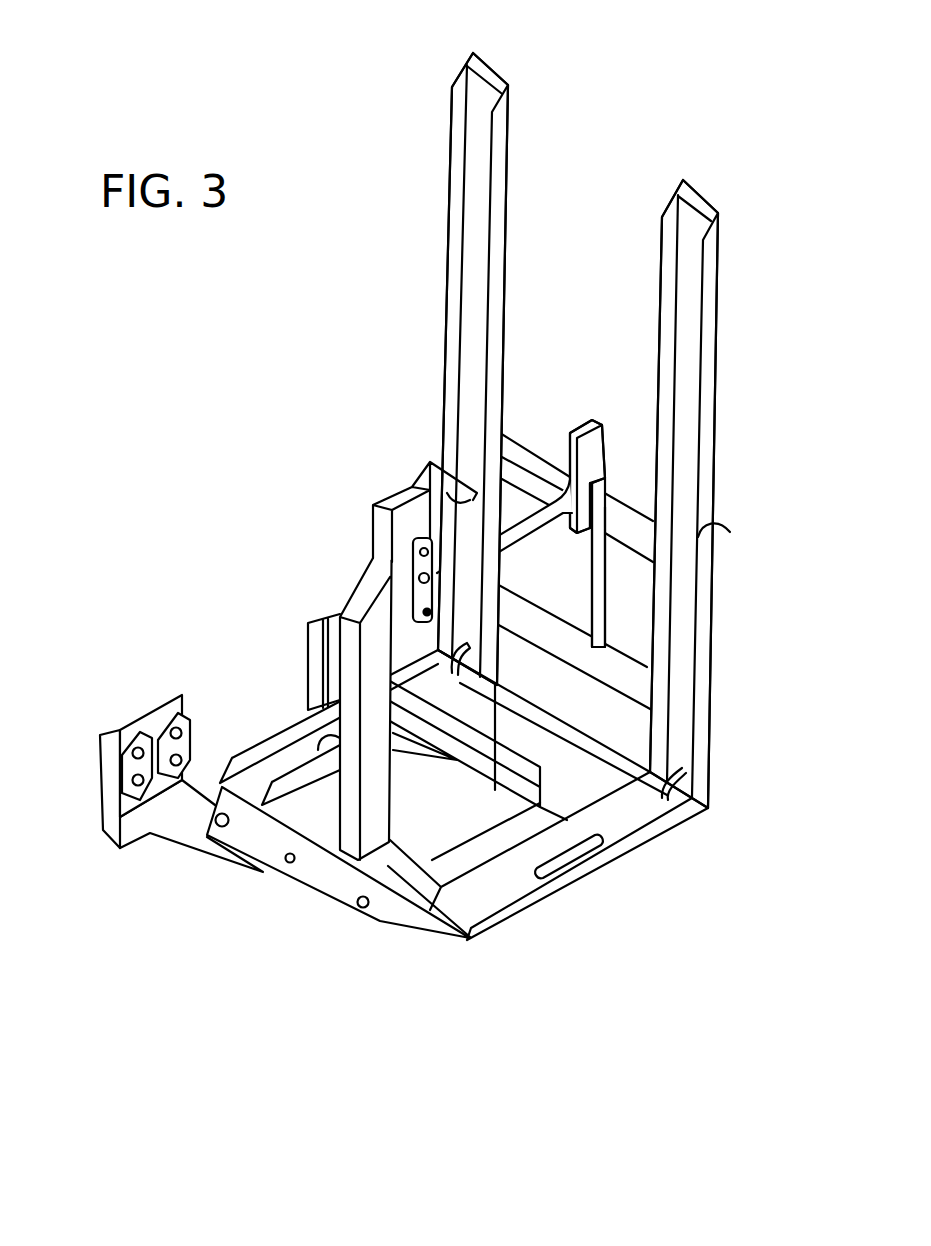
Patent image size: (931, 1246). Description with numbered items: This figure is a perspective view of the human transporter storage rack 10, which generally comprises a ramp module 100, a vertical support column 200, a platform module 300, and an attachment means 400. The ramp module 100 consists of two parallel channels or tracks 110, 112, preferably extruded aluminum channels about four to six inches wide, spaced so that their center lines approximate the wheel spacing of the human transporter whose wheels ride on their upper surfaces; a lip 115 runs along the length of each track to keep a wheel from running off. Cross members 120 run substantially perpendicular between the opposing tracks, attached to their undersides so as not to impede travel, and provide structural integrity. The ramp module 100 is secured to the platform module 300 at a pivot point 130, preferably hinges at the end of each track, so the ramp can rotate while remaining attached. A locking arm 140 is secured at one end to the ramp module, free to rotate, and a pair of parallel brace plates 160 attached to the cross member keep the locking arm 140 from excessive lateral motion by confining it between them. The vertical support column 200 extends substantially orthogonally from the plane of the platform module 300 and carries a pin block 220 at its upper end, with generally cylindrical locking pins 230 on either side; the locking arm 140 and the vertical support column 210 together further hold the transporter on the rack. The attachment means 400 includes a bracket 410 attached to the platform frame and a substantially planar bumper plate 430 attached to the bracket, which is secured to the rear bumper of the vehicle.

The storage rack 10 is at (443, 563).
The ramp module 100 is at (588, 424).
The track 110 is at (480, 87).
The track 112 is at (692, 218).
The lip 115 is at (706, 530).
The cross member 120 is at (641, 672).
The pivot point 130 is at (707, 806).
The locking arm 140 is at (513, 532).
The brace plate 160 is at (600, 440).
The vertical support column 200 is at (274, 634).
The vertical support column 210 is at (365, 840).
The pin block 220 is at (373, 522).
The locking pin 230 is at (420, 612).
The platform module 300 is at (630, 840).
The attachment means 400 is at (157, 838).
The bracket 410 is at (283, 875).
The bumper plate 430 is at (107, 790).